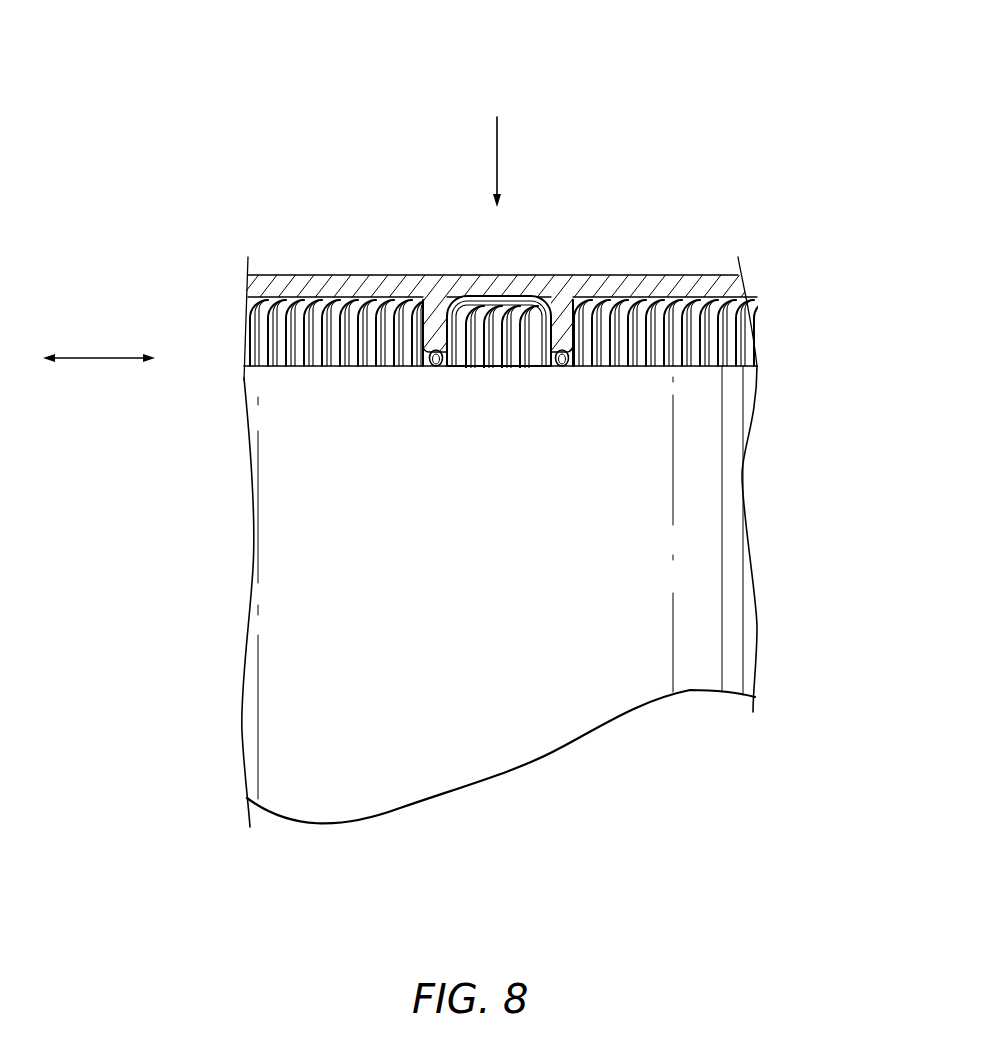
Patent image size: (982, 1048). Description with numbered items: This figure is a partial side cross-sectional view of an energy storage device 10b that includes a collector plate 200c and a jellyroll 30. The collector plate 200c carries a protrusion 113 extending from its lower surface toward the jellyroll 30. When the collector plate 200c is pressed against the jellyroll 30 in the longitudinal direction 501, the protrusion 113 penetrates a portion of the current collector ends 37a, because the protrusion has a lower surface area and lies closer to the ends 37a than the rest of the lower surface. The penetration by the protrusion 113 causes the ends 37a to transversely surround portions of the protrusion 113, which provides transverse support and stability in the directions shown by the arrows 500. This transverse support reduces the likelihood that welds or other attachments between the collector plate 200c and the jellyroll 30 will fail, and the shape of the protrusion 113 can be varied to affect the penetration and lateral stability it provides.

The energy storage device 10b is at (793, 94).
The jellyroll 30 is at (497, 598).
The current collector ends 37a is at (790, 338).
The protrusion 113 is at (564, 290).
The collector plate 200c is at (798, 259).
The transverse direction 500 is at (100, 357).
The longitudinal direction 501 is at (497, 138).